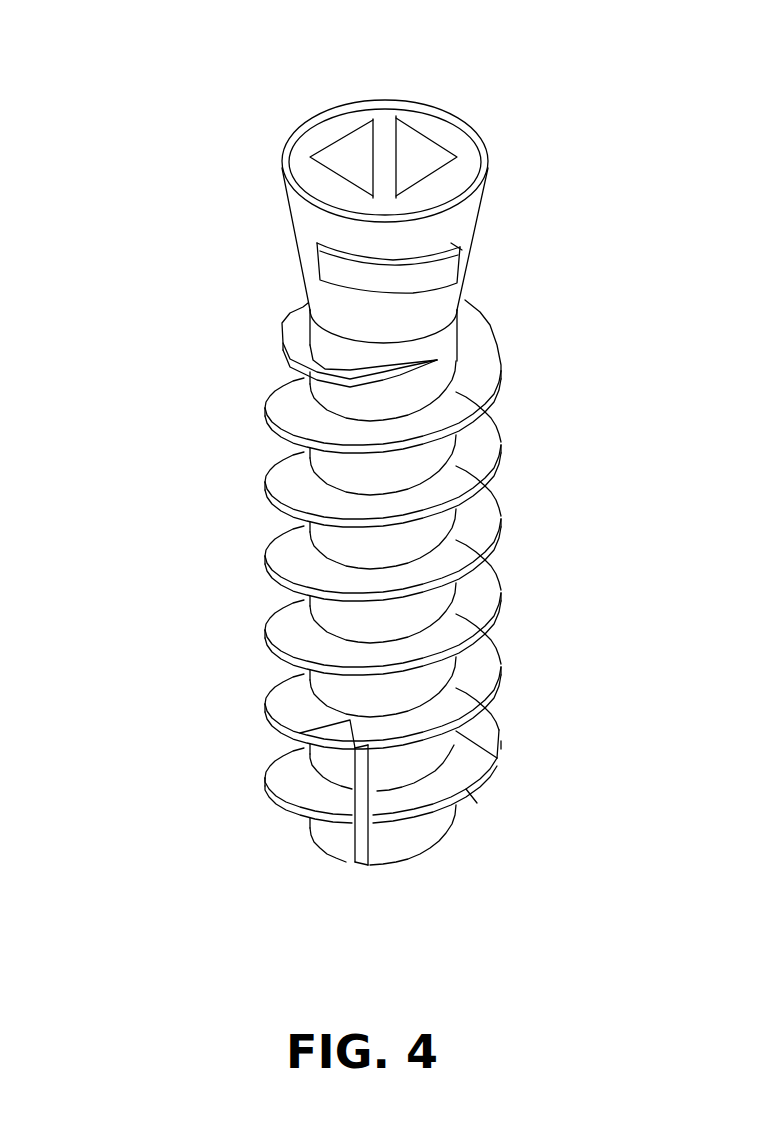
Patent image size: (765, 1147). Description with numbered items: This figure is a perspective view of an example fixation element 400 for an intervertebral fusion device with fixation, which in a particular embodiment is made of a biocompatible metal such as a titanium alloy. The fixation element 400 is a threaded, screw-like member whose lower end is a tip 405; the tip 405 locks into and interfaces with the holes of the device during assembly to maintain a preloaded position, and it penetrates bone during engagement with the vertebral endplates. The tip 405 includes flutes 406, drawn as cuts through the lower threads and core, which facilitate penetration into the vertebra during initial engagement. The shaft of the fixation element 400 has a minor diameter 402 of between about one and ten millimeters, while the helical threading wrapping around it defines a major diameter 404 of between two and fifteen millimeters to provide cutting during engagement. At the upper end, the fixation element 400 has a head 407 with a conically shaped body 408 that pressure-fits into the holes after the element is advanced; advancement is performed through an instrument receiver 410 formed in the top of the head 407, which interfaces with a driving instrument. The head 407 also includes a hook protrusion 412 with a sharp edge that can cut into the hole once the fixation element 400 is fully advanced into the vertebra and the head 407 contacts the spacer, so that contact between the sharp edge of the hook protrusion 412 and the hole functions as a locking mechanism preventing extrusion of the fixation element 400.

The fixation element 400 is at (345, 468).
The minor diameter 402 is at (355, 482).
The major diameter 404 is at (500, 452).
The tip 405 is at (465, 870).
The flutes 406 is at (480, 723).
The head 407 is at (331, 209).
The conically shaped body 408 is at (387, 209).
The instrument receiver 410 is at (353, 155).
The hook protrusion 412 is at (345, 277).